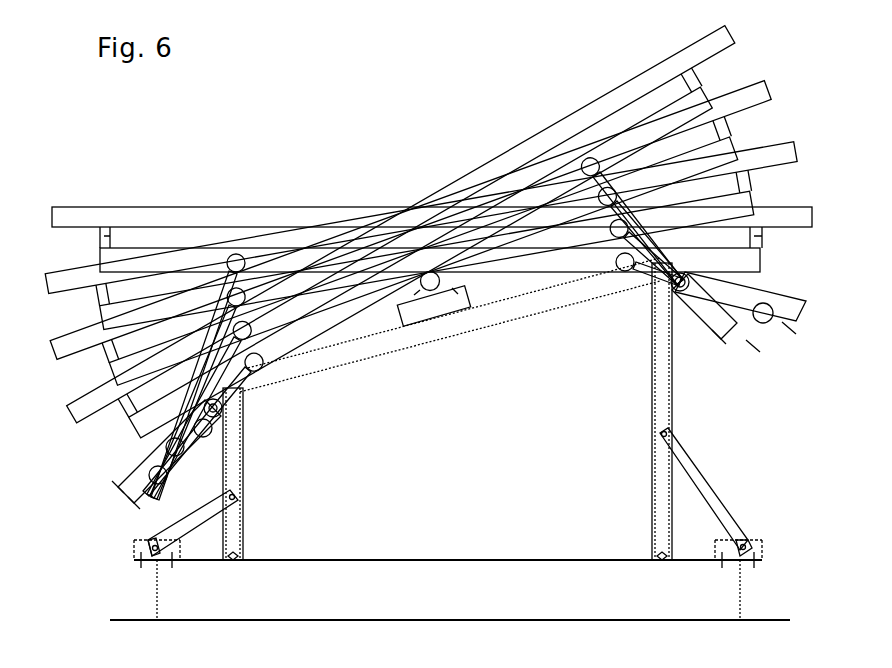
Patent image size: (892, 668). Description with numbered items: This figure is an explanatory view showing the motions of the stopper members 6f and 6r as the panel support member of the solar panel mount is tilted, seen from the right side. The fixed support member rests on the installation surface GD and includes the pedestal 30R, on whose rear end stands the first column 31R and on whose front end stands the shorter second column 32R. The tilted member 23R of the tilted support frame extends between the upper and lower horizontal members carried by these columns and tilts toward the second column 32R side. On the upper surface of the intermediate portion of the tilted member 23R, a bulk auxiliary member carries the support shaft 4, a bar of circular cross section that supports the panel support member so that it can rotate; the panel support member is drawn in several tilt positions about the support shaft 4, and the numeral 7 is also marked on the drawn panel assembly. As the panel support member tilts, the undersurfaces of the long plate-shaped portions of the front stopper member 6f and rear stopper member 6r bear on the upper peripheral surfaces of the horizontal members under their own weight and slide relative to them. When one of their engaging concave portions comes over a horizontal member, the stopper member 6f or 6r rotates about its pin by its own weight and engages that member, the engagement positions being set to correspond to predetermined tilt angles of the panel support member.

The solar panel 7 is at (186, 206).
The support shaft 4 is at (438, 290).
The tilted member 23R is at (392, 338).
The second column 32R is at (240, 450).
The first column 31R is at (652, 408).
The pedestal 30R is at (414, 560).
The stopper member 6f is at (117, 489).
The stopper member 6r is at (732, 342).
The installation surface GD is at (760, 620).